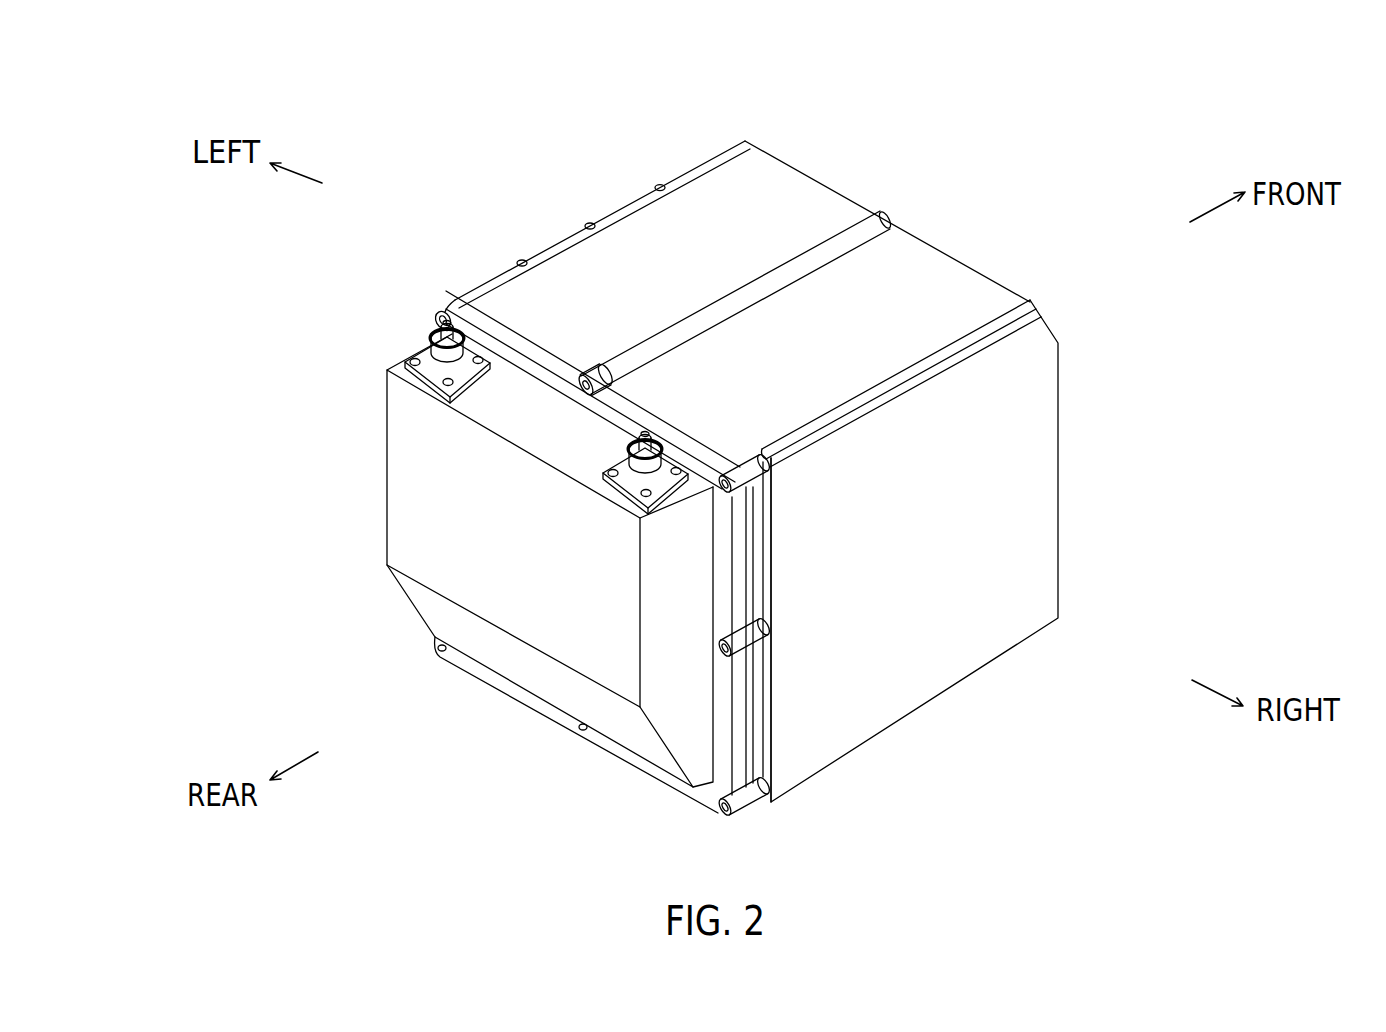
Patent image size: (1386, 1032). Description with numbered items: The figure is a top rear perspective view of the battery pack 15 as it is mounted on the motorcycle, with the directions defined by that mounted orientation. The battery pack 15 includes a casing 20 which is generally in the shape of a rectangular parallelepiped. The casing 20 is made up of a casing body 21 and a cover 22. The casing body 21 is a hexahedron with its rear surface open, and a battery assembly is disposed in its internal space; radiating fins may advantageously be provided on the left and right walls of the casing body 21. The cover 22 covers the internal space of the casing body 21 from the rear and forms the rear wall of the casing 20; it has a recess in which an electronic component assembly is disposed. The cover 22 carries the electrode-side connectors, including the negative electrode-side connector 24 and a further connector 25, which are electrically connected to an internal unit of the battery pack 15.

The battery pack 15 is at (668, 116).
The casing 20 is at (779, 146).
The casing body 21 is at (929, 243).
The cover 22 is at (400, 512).
The negative electrode-side connector 24 is at (433, 330).
The negative terminal 25 is at (657, 452).